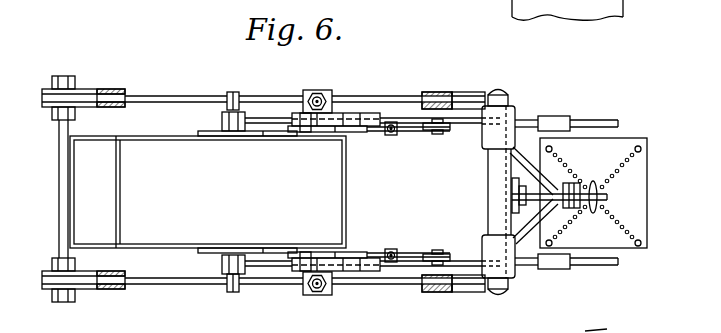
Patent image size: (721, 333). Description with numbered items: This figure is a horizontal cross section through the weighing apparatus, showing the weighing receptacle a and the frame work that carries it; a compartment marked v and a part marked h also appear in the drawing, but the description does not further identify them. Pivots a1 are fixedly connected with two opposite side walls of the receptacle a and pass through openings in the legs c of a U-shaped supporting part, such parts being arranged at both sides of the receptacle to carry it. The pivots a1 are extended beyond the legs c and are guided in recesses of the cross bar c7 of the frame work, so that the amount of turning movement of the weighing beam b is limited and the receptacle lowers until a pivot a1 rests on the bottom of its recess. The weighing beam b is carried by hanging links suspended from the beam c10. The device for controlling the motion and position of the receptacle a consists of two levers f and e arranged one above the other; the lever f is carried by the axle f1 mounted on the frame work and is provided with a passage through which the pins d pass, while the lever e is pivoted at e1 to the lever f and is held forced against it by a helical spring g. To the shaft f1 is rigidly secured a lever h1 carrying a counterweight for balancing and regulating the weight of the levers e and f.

The receptacle a is at (208, 192).
The frame compartment v is at (103, 192).
The cross bar c7 is at (163, 88).
The pivot a1 is at (233, 92).
The leg c is at (222, 119).
The weighing beam b is at (272, 121).
The beam c10 is at (395, 93).
The pin d is at (305, 133).
The lever e is at (325, 133).
The helical spring g is at (390, 136).
The pivot e1 is at (437, 250).
The lever f is at (478, 256).
The axle f1 is at (488, 197).
The sleeve h is at (560, 109).
The lever h1 is at (605, 120).